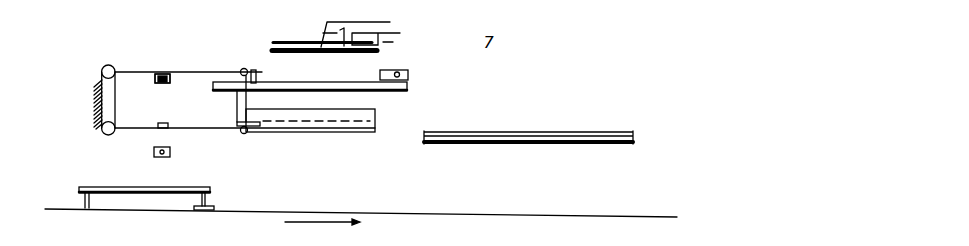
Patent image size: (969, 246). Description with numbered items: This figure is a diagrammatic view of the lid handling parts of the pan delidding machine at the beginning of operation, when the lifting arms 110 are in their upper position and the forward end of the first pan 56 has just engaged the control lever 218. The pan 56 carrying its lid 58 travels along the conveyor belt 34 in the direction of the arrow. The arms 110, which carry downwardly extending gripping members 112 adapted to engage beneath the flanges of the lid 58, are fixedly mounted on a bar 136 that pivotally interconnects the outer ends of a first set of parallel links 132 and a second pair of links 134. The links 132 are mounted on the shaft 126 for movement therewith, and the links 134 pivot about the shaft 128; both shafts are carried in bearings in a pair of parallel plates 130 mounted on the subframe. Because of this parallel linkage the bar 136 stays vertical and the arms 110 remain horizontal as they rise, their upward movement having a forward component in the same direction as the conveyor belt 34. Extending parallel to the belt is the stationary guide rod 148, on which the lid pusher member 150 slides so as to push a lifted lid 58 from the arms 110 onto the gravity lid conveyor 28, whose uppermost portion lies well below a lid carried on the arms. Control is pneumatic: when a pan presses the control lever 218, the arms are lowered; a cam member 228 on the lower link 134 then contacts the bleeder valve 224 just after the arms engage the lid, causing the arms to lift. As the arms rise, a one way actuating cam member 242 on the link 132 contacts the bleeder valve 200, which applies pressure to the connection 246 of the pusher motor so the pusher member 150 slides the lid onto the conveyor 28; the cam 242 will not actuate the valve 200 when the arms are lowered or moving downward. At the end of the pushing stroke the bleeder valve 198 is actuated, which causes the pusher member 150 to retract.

The gravity lid conveyor 28 is at (492, 130).
The conveyor belt 34 is at (267, 211).
The pan 56 is at (87, 207).
The lid 58 is at (95, 187).
The arm 110 is at (347, 112).
The gripping member 112 is at (350, 128).
The shaft 126 is at (108, 65).
The shaft 128 is at (104, 135).
The plate 130 is at (103, 104).
The parallel link 132 is at (137, 72).
The link 134 is at (133, 128).
The bar 136 is at (241, 83).
The guide rod 148 is at (292, 90).
The lid pusher member 150 is at (257, 126).
The bleeder valve 198 is at (395, 71).
The bleeder valve 200 is at (170, 83).
The control lever 218 is at (213, 206).
The bleeder valve 224 is at (170, 152).
The cam member 228 is at (168, 127).
The one way actuating cam member 242 is at (168, 75).
The connection 246 is at (261, 65).